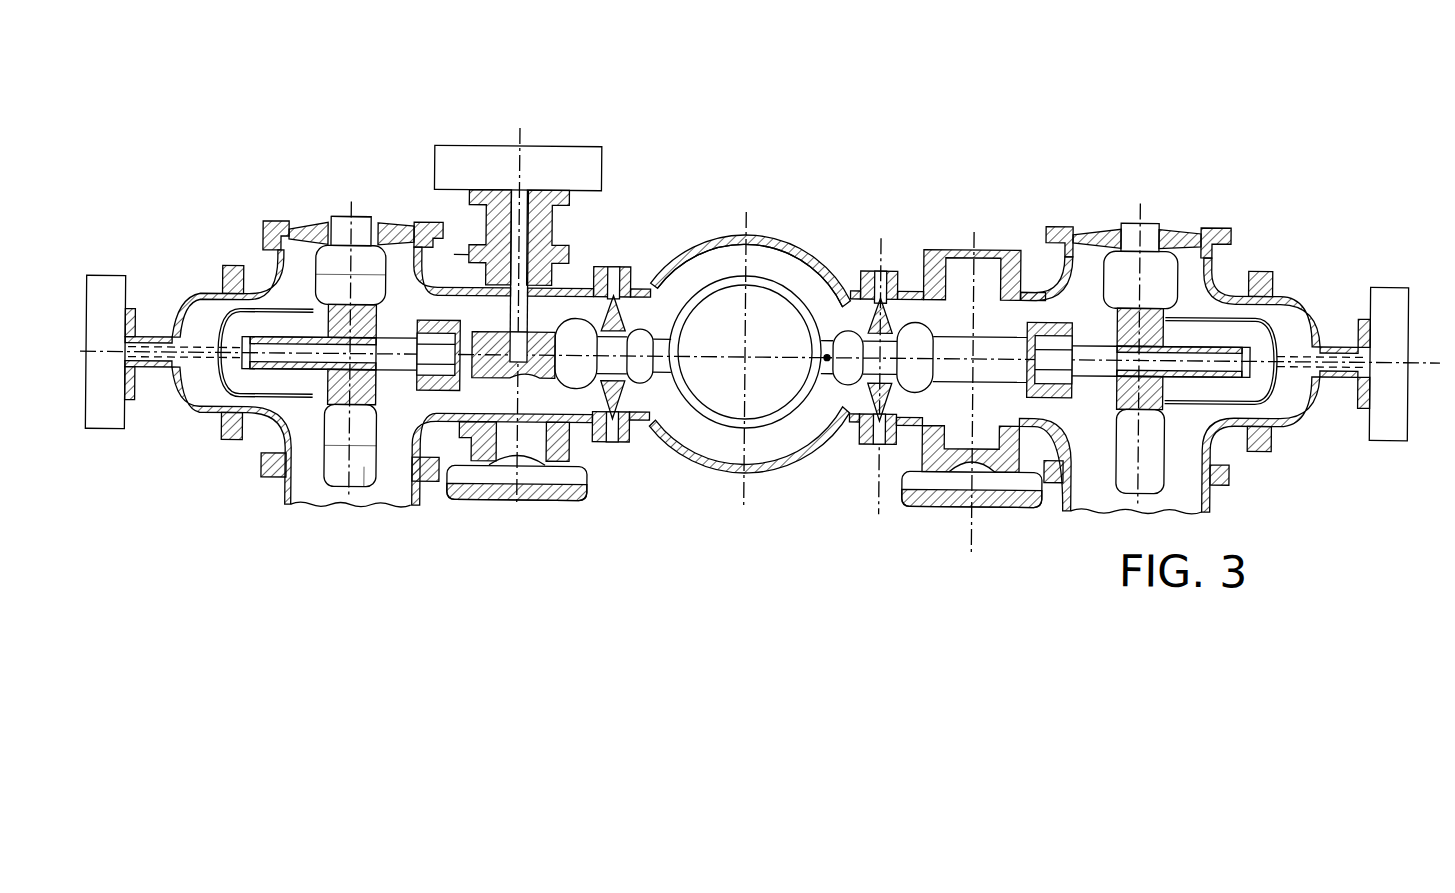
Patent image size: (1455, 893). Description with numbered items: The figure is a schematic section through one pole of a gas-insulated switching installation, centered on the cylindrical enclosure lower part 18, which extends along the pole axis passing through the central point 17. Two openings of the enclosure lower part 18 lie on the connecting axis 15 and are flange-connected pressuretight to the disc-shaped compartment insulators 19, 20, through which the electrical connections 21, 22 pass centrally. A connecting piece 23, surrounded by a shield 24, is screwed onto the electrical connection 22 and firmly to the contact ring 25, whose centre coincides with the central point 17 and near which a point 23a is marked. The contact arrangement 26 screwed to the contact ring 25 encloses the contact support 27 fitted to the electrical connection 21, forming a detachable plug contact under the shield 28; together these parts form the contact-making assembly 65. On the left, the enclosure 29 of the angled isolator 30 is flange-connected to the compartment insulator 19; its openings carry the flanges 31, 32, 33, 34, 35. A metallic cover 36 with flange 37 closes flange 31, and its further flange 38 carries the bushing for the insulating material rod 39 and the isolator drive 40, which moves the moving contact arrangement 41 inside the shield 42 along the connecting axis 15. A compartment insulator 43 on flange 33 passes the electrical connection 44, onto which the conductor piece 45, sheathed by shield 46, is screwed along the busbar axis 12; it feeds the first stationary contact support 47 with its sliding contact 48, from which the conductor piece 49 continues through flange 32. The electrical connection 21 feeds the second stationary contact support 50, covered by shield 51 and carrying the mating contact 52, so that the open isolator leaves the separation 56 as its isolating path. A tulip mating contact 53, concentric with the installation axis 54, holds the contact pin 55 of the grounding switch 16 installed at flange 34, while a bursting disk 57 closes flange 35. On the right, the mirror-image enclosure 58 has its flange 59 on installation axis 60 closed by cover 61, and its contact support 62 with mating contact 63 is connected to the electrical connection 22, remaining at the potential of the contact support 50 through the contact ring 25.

The busbar axis 12 is at (348, 201).
The connecting axis 15 is at (1423, 357).
The grounding switch 16 is at (537, 165).
The central point 17 is at (750, 367).
The enclosure lower part 18 is at (768, 237).
The compartment insulator 19 is at (613, 430).
The compartment insulator 20 is at (881, 442).
The electrical connection 21 is at (583, 323).
The electrical connection 22 is at (880, 272).
The connecting piece 23 is at (847, 370).
The pivot point 23a is at (827, 360).
The shield 24 is at (850, 323).
The contact ring 25 is at (720, 427).
The contact arrangement 26 is at (660, 365).
The contact support 27 is at (633, 360).
The shield 28 is at (648, 323).
The enclosure 29 is at (244, 306).
The isolator 30 is at (416, 595).
The flange 31 is at (238, 442).
The flange 32 is at (267, 481).
The flange 33 is at (262, 255).
The flange 34 is at (452, 257).
The flange 35 is at (558, 416).
The metallic cover 36 is at (180, 338).
The flange 37 is at (222, 270).
The flange 38 is at (132, 411).
The insulating material rod 39 is at (193, 417).
The isolator drive 40 is at (103, 301).
The moving contact arrangement 41 is at (299, 376).
The shield 42 is at (252, 401).
The compartment insulator 43 is at (310, 224).
The electrical connection 44 is at (338, 221).
The conductor piece 45 is at (362, 263).
The shield 46 is at (392, 263).
The first stationary contact support 47 is at (338, 401).
The sliding contact 48 is at (383, 398).
The conductor piece 49 is at (365, 470).
The second stationary contact support 50 is at (572, 377).
The shield 51 is at (577, 297).
The mating contact 52 is at (484, 385).
The mating contact 53 is at (505, 370).
The installation axis 54 is at (522, 505).
The contact pin 55 is at (495, 192).
The separation 56 is at (390, 356).
The bursting disk 57 is at (507, 465).
The enclosure 58 is at (1222, 278).
The flange 59 is at (935, 250).
The installation axis 60 is at (1049, 432).
The cover 61 is at (1005, 250).
The contact support 62 is at (990, 378).
The mating contact 63 is at (1047, 394).
The contact-making assembly 65 is at (715, 282).